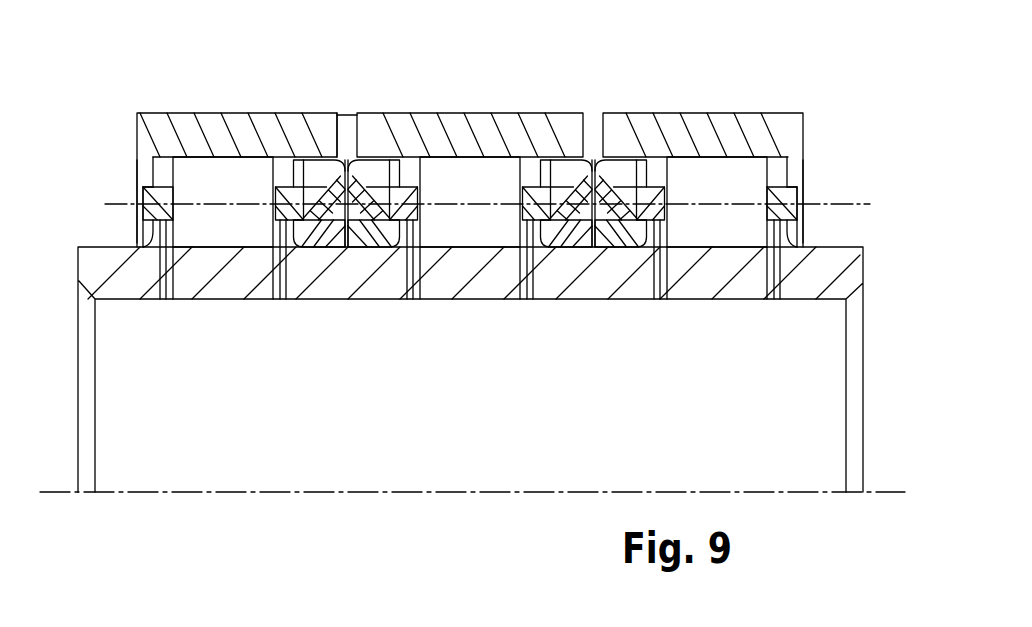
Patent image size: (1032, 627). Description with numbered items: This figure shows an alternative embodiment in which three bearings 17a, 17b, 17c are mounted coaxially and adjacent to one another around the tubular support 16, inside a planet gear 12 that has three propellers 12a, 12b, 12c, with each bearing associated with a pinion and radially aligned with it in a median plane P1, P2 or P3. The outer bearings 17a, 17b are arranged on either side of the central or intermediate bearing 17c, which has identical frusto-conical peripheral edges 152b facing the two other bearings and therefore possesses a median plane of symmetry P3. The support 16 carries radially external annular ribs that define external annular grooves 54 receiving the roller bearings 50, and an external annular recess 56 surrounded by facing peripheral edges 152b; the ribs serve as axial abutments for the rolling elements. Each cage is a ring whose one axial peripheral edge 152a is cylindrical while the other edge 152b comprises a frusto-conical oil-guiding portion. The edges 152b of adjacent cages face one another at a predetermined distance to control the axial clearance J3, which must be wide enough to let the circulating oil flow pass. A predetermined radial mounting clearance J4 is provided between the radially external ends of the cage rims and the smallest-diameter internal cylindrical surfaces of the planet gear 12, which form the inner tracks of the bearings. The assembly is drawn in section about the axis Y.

The planet gear 12 is at (462, 125).
The propeller 12a is at (147, 135).
The propeller 12b is at (782, 112).
The propeller 12c is at (538, 125).
The support 16 is at (835, 264).
The bearing 17a is at (127, 192).
The bearing 17b is at (795, 172).
The central or intermediate bearing 17c is at (371, 158).
The roller bearings 50 is at (200, 175).
The external annular grooves 54 is at (260, 255).
The external annular recess 56 is at (323, 232).
The axial peripheral edge 152a is at (150, 214).
The axial peripheral edge 152b is at (268, 198).
The median plane P1 is at (223, 333).
The median plane P2 is at (472, 333).
The median plane of symmetry P3 is at (717, 333).
The axial clearance J3 is at (345, 247).
The radial mounting clearance J4 is at (326, 157).
The axis of rotation Y is at (876, 492).